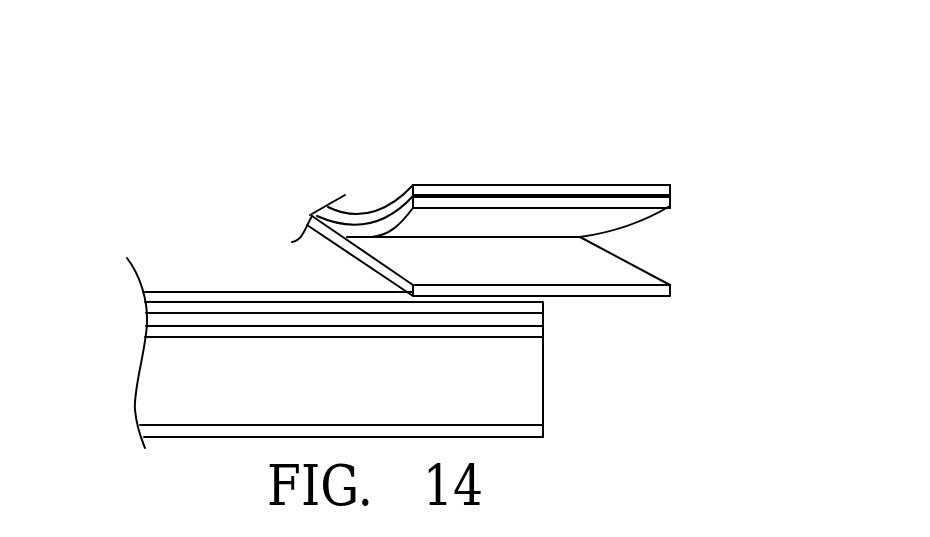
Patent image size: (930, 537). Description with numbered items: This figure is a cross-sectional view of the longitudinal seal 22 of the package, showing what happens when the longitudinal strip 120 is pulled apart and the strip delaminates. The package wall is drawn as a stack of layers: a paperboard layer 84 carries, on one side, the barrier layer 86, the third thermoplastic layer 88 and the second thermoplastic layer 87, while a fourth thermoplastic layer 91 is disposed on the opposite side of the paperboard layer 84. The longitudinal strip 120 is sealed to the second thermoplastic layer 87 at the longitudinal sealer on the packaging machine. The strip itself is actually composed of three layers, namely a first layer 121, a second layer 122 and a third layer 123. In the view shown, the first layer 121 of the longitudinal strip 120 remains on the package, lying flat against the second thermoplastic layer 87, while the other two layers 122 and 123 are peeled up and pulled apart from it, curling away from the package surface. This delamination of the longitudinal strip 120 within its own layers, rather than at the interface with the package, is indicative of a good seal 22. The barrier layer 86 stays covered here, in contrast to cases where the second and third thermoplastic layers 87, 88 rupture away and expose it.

The seal 22 is at (331, 134).
The longitudinal strip 120 is at (716, 242).
The third layer of the longitudinal strip 123 is at (670, 190).
The second layer of the longitudinal strip 122 is at (670, 200).
The first layer of the longitudinal strip 121 is at (670, 289).
The paperboard layer 84 is at (543, 368).
The second thermoplastic layer 87 is at (143, 293).
The third thermoplastic layer 88 is at (145, 312).
The barrier layer 86 is at (145, 325).
The fourth thermoplastic layer 91 is at (543, 437).